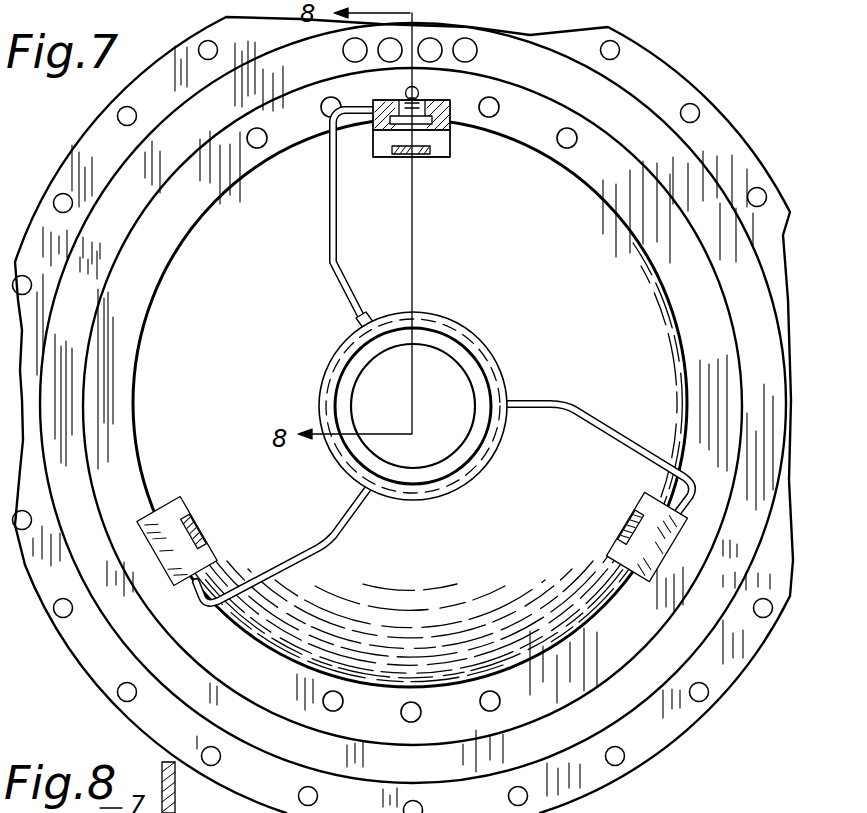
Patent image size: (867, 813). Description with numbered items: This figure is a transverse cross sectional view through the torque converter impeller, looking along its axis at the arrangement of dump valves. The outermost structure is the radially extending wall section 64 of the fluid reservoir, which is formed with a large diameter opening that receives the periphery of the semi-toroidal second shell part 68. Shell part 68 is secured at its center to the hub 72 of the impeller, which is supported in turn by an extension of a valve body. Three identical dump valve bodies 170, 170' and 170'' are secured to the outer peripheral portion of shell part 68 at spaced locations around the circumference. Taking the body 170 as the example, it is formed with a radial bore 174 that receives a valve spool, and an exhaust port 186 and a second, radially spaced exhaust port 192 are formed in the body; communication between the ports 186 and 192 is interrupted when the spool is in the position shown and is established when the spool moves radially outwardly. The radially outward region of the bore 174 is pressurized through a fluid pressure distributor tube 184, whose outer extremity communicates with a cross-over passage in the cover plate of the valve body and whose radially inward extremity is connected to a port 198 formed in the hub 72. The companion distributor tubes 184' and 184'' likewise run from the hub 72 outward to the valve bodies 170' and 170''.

The wall section 64 is at (678, 153).
The second shell part 68 is at (638, 308).
The hub 72 is at (466, 330).
The dump valve body 170 is at (462, 128).
The radial bore 174 is at (418, 109).
The fluid pressure distributor tube 184 is at (364, 216).
The exhaust port 186 is at (432, 140).
The exhaust port 192 is at (393, 133).
The port 198 is at (368, 318).
The dump valve body 170' is at (620, 523).
The fluid pressure distributor tube 184' is at (598, 458).
The dump valve body 170'' is at (202, 518).
The fluid pressure distributor tube 184'' is at (284, 540).